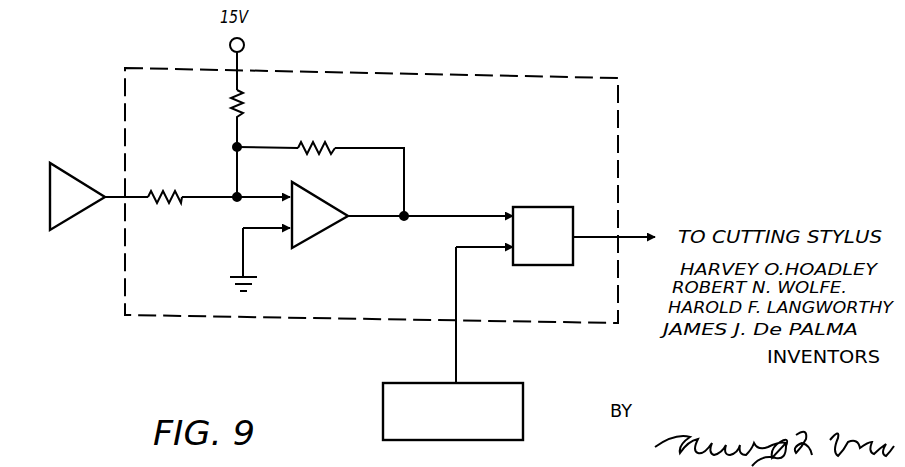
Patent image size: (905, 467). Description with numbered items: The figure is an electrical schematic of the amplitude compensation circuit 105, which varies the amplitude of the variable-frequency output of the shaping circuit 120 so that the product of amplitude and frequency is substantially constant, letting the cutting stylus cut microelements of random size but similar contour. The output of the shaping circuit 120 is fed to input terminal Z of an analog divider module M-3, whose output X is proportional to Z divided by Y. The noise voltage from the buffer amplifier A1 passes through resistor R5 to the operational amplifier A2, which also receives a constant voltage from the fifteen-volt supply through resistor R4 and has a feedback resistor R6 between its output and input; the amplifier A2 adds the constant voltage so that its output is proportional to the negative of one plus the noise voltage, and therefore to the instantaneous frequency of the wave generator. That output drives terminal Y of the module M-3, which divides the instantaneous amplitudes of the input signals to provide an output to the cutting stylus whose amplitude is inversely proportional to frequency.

The amplitude compensation circuit 105 is at (627, 177).
The shaping circuit 120 is at (523, 436).
The resistor R4 is at (244, 98).
The resistor R5 is at (166, 188).
The resistor R6 is at (316, 141).
The buffer amplifier A1 is at (77, 196).
The operational amplifier A2 is at (320, 215).
The analog divider module M-3 is at (543, 223).